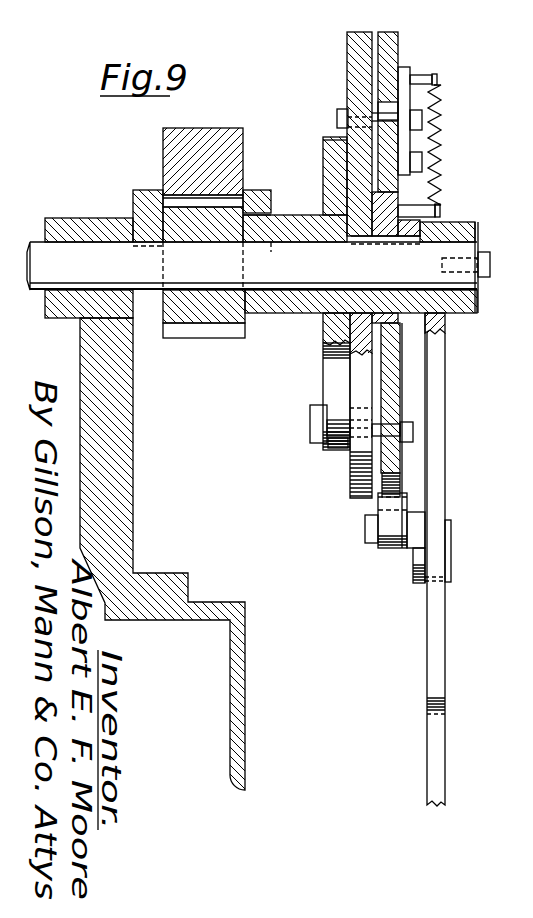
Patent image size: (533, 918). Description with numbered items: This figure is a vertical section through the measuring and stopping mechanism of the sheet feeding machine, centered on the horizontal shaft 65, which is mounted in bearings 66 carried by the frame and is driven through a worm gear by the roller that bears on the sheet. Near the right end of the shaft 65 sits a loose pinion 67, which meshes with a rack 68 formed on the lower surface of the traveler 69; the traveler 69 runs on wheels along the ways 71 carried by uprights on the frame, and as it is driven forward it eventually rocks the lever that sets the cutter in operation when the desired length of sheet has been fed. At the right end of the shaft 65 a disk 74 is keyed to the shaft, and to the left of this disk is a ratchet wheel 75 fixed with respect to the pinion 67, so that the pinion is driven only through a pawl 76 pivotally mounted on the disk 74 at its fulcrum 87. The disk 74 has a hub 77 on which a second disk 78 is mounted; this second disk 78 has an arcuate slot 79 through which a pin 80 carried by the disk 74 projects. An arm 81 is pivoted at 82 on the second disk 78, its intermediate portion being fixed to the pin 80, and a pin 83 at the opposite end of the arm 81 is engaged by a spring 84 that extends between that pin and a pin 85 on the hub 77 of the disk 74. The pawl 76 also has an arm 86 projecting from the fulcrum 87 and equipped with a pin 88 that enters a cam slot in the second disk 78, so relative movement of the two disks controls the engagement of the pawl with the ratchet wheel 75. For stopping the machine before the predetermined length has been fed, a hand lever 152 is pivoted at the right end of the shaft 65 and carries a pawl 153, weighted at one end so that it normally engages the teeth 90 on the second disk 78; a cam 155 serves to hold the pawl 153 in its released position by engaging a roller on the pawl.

The shaft 65 is at (258, 267).
The bearings 66 is at (55, 232).
The loose pinion 67 is at (217, 312).
The rack 68 is at (178, 200).
The traveler 69 is at (200, 146).
The ways 71 is at (142, 206).
The disk 74 is at (360, 84).
The ratchet wheel 75 is at (332, 162).
The pawl 76 is at (336, 385).
The hub 77 is at (385, 324).
The second disk 78 is at (396, 58).
The arcuate slot 79 is at (392, 108).
The pin 80 is at (340, 118).
The arm 81 is at (406, 138).
The pivot 82 is at (425, 163).
The pin 83 is at (437, 80).
The spring 84 is at (442, 112).
The pin 85 is at (440, 210).
The arm 86 is at (340, 446).
The fulcrum 87 is at (316, 415).
The pin 88 is at (312, 432).
The teeth 90 is at (386, 32).
The hand lever 152 is at (443, 638).
The pawl 153 is at (393, 528).
The cam 155 is at (452, 549).